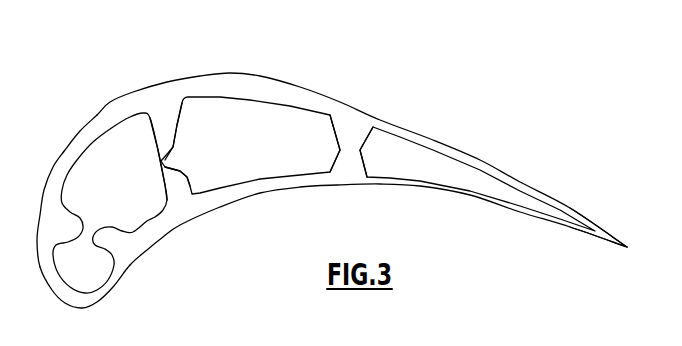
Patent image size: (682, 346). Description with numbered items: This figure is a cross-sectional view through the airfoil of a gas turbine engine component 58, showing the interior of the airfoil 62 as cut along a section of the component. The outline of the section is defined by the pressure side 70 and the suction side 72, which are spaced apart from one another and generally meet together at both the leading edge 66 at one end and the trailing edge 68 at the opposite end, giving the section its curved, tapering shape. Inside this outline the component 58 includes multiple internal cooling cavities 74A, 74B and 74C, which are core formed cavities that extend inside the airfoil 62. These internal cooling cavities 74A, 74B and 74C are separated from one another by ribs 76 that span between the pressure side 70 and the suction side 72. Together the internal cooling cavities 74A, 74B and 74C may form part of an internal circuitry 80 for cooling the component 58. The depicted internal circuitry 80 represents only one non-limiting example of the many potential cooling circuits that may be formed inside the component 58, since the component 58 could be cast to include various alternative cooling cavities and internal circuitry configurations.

The component 58 is at (335, 177).
The airfoil 62 is at (76, 104).
The leading edge 66 is at (64, 304).
The trailing edge 68 is at (614, 208).
The pressure side 70 is at (277, 194).
The suction side 72 is at (354, 112).
The internal cooling cavity 74A is at (122, 194).
The internal cooling cavity 74B is at (260, 151).
The internal cooling cavity 74C is at (428, 175).
The rib 76 is at (163, 130).
The internal circuitry 80 is at (200, 201).